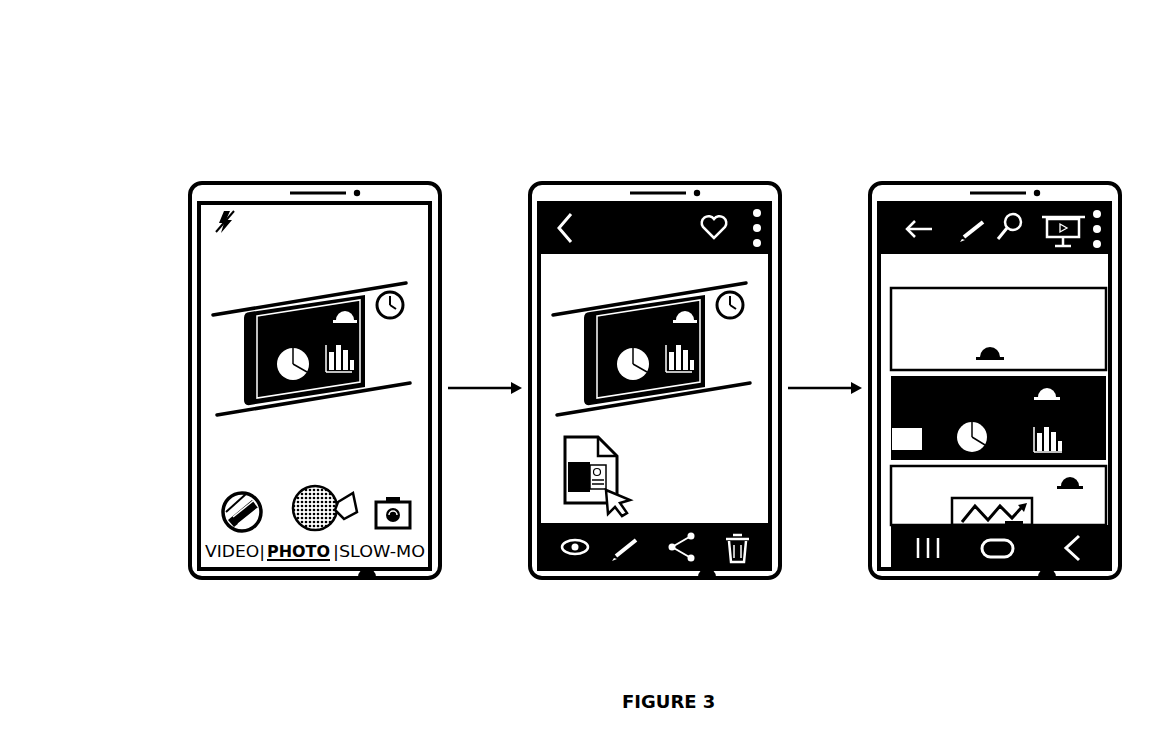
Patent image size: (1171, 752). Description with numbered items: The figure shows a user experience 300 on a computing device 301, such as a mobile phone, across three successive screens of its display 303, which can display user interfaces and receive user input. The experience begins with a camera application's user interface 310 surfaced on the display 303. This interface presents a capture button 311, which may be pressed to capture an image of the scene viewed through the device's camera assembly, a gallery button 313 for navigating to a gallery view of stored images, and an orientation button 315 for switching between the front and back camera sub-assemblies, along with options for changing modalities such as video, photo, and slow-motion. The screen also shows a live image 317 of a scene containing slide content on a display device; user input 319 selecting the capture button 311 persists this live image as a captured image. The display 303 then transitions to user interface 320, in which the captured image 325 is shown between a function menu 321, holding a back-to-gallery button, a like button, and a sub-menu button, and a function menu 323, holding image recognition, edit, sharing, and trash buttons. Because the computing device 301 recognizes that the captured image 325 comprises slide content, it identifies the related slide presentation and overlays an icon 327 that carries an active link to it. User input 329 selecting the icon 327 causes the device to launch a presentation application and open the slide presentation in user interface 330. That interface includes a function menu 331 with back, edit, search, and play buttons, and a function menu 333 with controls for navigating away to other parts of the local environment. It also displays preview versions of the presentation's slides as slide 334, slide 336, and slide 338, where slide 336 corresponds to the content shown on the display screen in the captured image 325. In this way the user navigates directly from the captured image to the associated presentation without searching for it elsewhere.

The user experience 300 is at (78, 68).
The computing device 301 is at (192, 579).
The display 303 is at (436, 235).
The user interface 310 is at (417, 231).
The capture button 311 is at (294, 490).
The gallery button 313 is at (232, 490).
The orientation button 315 is at (401, 495).
The live image 317 is at (352, 394).
The user input 319 is at (355, 490).
The user interface 320 is at (757, 478).
The function menu 321 is at (592, 258).
The function menu 323 is at (701, 522).
The captured image 325 is at (692, 394).
The icon 327 is at (618, 458).
The user input 329 is at (642, 493).
The user interface 330 is at (1103, 281).
The function menu 331 is at (925, 257).
The function menu 333 is at (943, 522).
The slide 334 is at (1098, 353).
The slide 336 is at (1098, 419).
The slide 338 is at (1098, 517).